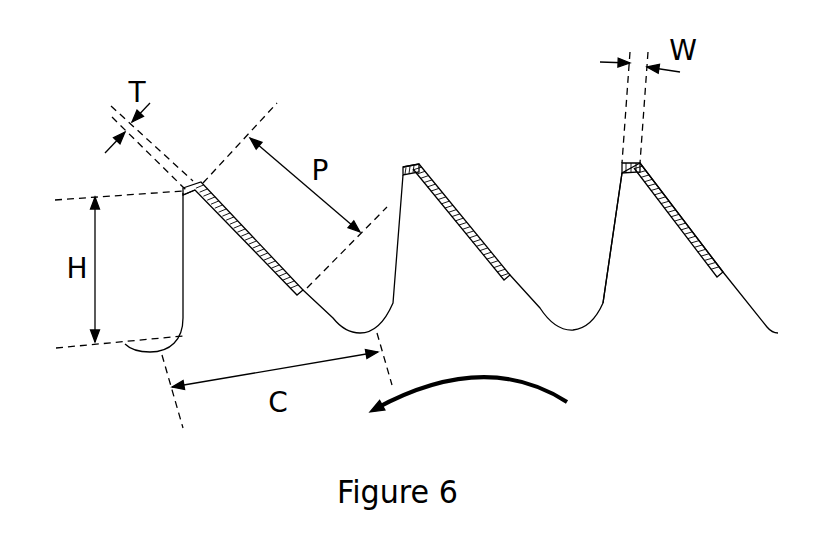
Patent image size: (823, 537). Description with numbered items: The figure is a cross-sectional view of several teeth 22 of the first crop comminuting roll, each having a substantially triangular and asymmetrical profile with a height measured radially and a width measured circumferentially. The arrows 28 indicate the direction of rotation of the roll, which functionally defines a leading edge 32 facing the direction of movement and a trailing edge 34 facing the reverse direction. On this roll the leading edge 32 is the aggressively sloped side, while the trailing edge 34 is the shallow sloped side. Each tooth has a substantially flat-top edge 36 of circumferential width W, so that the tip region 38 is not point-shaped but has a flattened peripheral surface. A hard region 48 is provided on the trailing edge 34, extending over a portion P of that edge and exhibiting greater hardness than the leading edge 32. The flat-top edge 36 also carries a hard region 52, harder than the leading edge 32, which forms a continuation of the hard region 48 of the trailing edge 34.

The teeth 22 is at (655, 275).
The arrows 28 is at (502, 382).
The leading edge 32 is at (612, 232).
The trailing edge 34 is at (698, 230).
The flat-top edge 36 is at (405, 165).
The tip region 38 is at (608, 145).
The hard region 48 is at (452, 200).
The hard region 52 is at (417, 165).